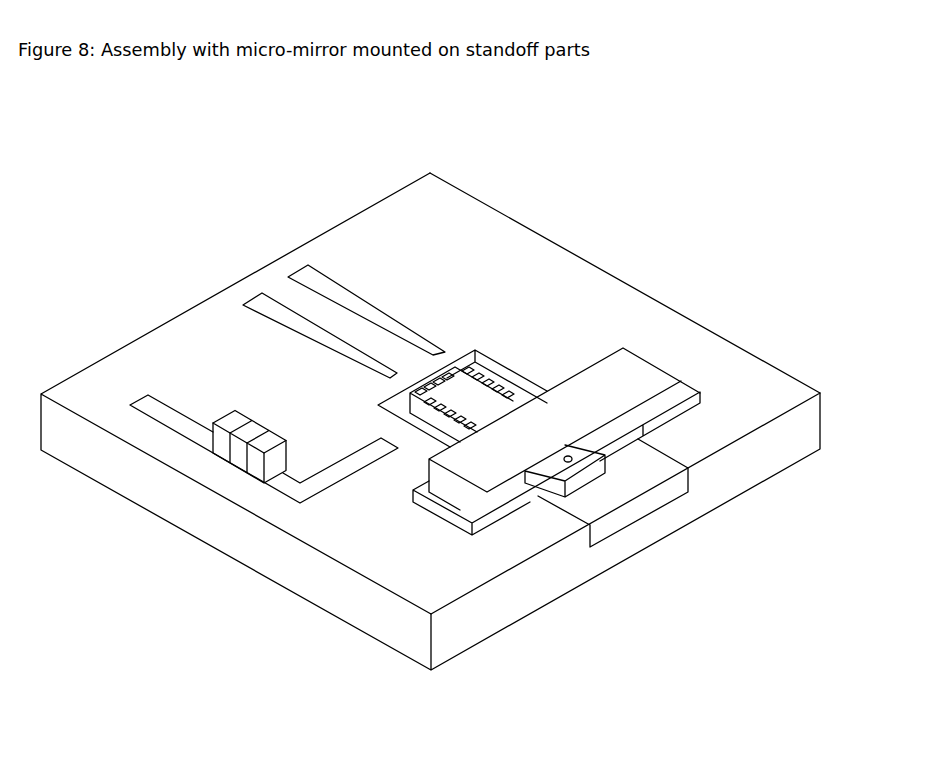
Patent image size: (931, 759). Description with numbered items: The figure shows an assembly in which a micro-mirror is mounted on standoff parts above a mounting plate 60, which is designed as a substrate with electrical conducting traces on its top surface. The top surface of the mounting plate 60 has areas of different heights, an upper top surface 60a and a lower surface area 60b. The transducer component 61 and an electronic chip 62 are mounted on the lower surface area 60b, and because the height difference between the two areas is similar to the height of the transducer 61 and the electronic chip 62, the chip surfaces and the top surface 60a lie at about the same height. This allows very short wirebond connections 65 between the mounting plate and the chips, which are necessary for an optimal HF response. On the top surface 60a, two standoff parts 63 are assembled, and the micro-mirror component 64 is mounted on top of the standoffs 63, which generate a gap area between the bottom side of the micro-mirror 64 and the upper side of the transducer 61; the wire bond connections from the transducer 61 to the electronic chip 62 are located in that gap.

The mounting plate 60 is at (460, 265).
The top surface of the mounting plate 60a is at (733, 413).
The lower surface area 60b is at (648, 495).
The transducer component 61 is at (568, 468).
The electronic chip 62 is at (477, 397).
The standoff parts 63 is at (680, 398).
The micro-mirror component 64 is at (600, 388).
The wirebond connections 65 is at (411, 376).